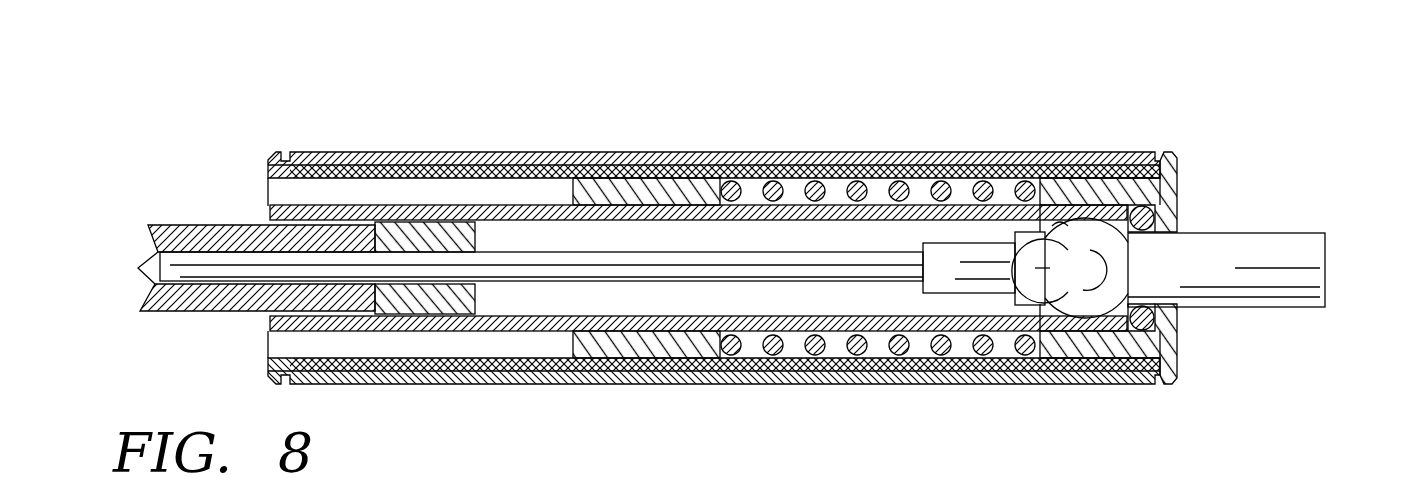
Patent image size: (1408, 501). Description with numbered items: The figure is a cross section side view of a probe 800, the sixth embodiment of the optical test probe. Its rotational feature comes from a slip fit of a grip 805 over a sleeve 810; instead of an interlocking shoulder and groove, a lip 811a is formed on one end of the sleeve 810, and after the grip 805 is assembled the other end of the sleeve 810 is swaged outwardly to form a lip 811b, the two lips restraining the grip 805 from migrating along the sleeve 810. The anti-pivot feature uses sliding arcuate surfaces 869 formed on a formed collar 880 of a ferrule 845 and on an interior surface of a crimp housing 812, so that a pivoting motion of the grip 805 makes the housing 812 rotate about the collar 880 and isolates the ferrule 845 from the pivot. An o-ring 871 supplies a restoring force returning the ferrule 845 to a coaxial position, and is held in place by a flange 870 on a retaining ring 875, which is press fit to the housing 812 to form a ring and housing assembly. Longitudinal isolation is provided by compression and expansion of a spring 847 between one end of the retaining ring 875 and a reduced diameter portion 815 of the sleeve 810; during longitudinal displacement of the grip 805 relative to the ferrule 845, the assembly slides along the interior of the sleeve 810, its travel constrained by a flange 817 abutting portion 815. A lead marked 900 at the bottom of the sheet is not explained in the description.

The probe 800 is at (860, 138).
The grip 805 is at (423, 152).
The sleeve 810 is at (399, 348).
The lip 811a is at (1167, 152).
The lip 811b is at (282, 152).
The crimp housing 812 is at (537, 206).
The reduced diameter portion 815 is at (707, 192).
The flange 817 is at (570, 348).
The ferrule 845 is at (1313, 256).
The spring 847 is at (793, 347).
The sliding arcuate surfaces 869 is at (1045, 180).
The flange 870 is at (1165, 213).
The o-ring 871 is at (1165, 352).
The retaining ring 875 is at (1048, 350).
The formed collar 880 is at (1110, 263).
The connector 900 is at (487, 500).